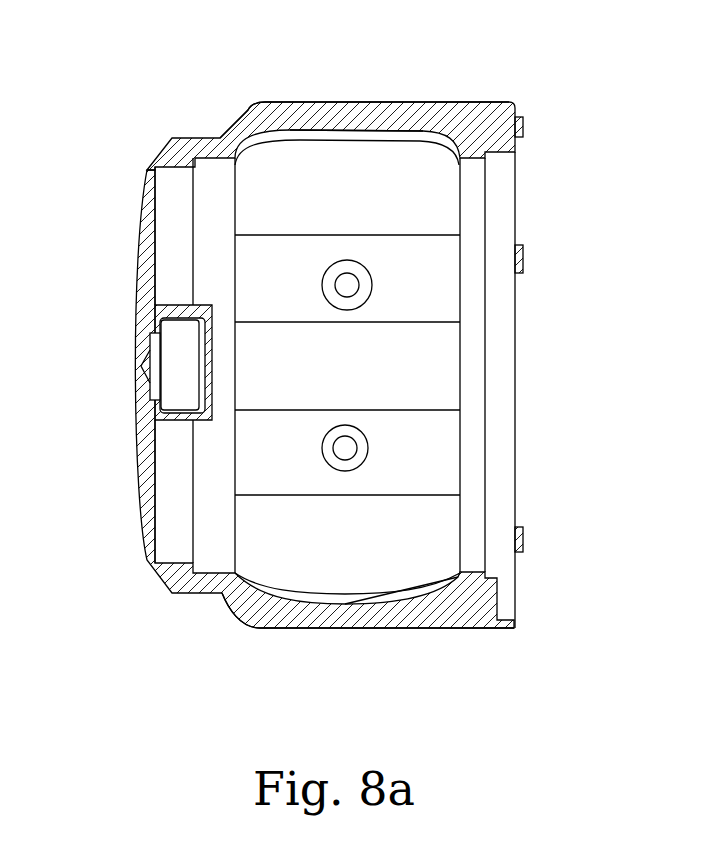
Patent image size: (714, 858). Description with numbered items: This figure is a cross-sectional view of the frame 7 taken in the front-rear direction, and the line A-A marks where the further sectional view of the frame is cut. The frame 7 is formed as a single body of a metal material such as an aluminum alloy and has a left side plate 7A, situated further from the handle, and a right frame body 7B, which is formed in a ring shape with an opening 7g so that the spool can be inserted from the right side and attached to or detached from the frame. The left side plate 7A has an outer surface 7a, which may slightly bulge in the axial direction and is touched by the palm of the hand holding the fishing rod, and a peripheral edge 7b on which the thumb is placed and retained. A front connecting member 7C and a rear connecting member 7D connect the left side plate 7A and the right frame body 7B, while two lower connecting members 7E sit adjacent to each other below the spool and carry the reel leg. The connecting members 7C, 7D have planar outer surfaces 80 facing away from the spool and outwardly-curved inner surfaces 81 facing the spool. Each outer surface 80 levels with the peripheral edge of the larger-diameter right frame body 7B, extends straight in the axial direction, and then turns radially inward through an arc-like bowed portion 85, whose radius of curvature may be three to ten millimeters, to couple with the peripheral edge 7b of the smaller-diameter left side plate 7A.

The frame 7 is at (320, 349).
The left side plate 7A is at (168, 132).
The right frame body 7B is at (495, 115).
The front connecting member 7C is at (428, 107).
The rear connecting member 7D is at (330, 630).
The lower connecting members 7E is at (438, 293).
The outer surface 7a is at (132, 303).
The peripheral edge 7b is at (190, 140).
The opening 7g is at (497, 157).
The planar outer surface 80 is at (405, 102).
The inner surface 81 is at (382, 142).
The bowed portion 85 is at (248, 102).
The line A- A is at (320, 179).